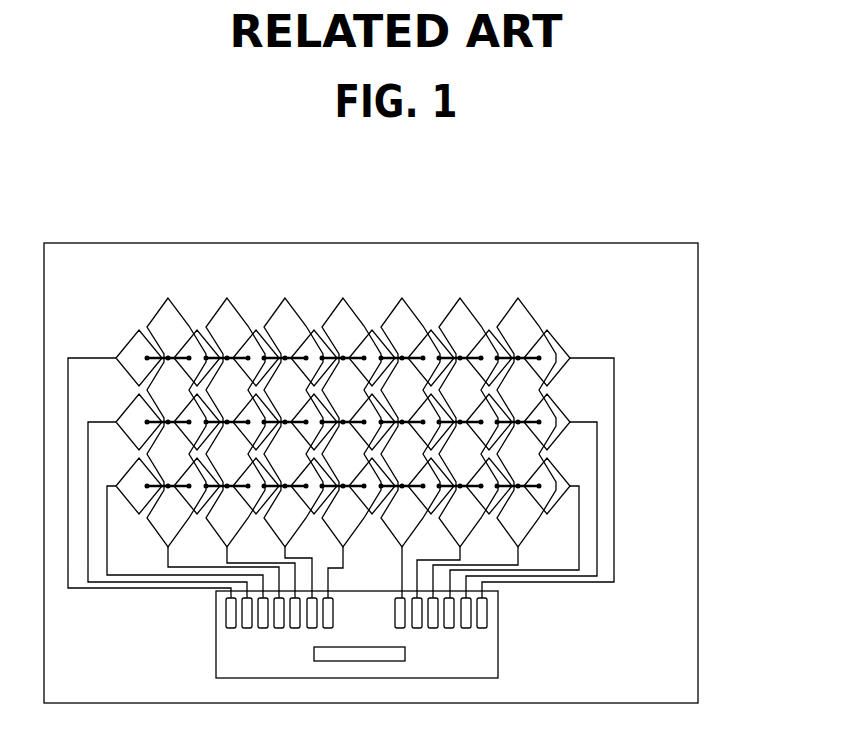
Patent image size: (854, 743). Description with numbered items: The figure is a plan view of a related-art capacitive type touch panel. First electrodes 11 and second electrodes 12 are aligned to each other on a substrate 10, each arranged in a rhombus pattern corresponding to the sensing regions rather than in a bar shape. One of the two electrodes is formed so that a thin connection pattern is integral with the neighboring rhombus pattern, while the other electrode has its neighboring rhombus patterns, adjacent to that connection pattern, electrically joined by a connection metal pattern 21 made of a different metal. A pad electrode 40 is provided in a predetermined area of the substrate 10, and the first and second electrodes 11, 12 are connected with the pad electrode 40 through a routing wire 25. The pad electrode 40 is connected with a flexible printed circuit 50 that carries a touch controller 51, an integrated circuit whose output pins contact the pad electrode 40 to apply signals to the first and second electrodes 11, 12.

The substrate 10 is at (698, 443).
The first electrodes 11 is at (552, 350).
The second electrodes 12 is at (470, 312).
The connection metal pattern 21 is at (527, 332).
The routing wire 25 is at (614, 388).
The pad electrode 40 is at (487, 612).
The flexible printed circuit 50 is at (498, 652).
The touch controller 51 is at (406, 652).